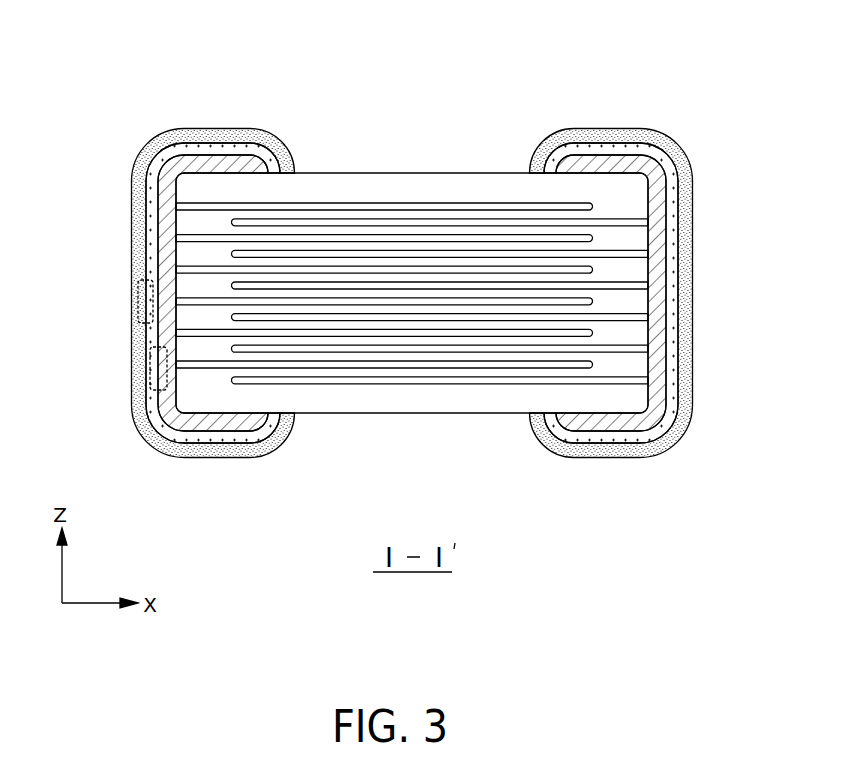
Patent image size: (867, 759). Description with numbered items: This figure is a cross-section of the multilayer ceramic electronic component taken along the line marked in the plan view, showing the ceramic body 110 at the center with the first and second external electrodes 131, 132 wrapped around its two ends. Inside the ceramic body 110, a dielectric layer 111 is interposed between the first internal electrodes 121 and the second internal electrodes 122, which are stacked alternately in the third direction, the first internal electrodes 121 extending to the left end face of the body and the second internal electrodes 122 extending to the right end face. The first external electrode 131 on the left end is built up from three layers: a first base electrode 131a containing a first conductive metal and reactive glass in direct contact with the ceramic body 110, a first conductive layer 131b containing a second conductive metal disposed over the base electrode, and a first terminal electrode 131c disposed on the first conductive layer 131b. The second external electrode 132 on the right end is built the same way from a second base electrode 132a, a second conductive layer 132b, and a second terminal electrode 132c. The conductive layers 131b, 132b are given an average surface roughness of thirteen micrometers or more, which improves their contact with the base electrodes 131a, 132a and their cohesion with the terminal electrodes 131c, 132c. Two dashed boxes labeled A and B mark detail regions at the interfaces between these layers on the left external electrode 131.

The ceramic body 110 is at (386, 172).
The dielectric layer 111 is at (185, 222).
The first internal electrode 121 is at (302, 204).
The second internal electrode 122 is at (240, 227).
The first external electrode 131 is at (175, 238).
The first base electrode 131a is at (222, 167).
The first conductive layer 131b is at (163, 132).
The first terminal electrode 131c is at (240, 50).
The second external electrode 132 is at (650, 238).
The second base electrode 132a is at (603, 163).
The second conductive layer 132b is at (658, 143).
The second terminal electrode 132c is at (583, 50).
The region A is at (137, 303).
The region B is at (150, 370).